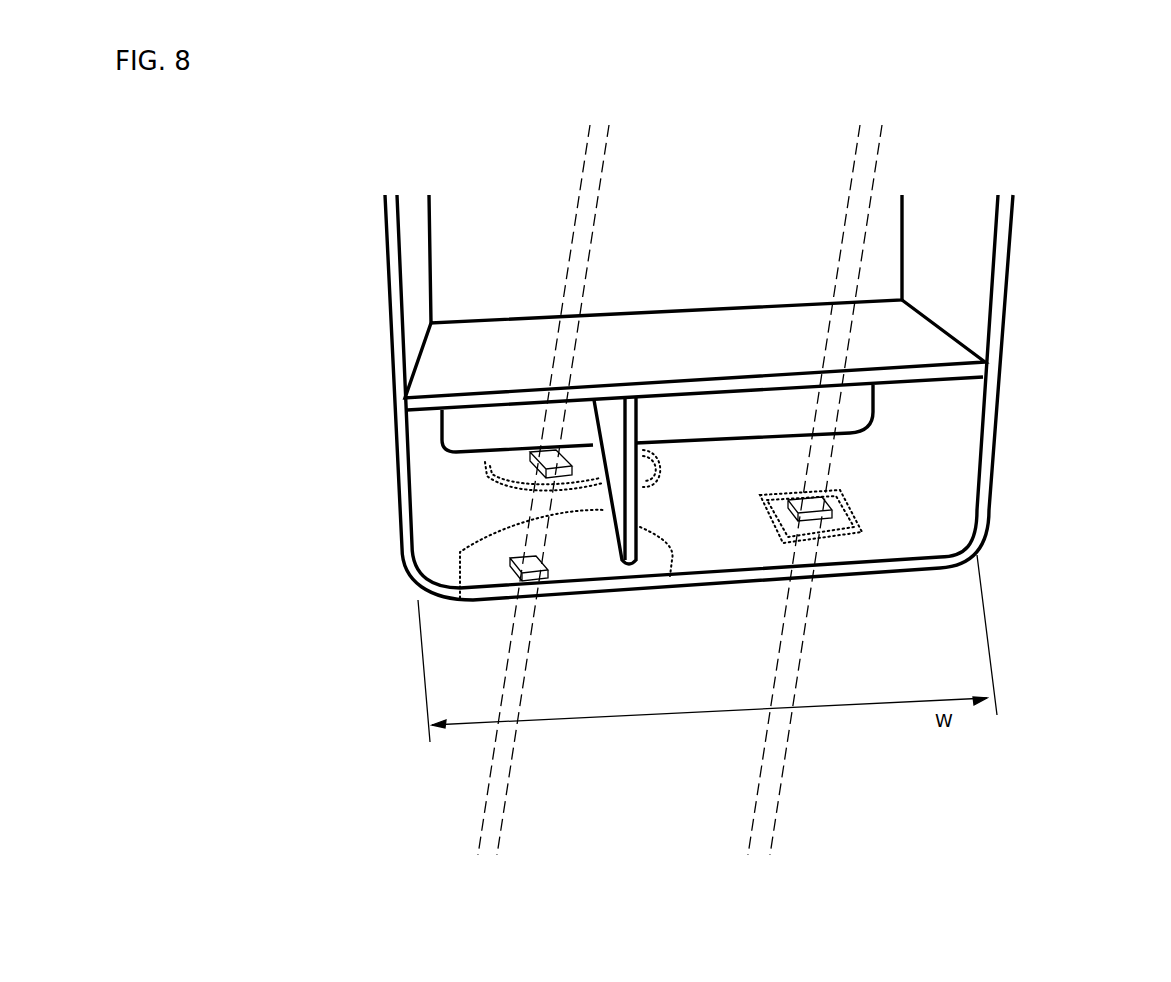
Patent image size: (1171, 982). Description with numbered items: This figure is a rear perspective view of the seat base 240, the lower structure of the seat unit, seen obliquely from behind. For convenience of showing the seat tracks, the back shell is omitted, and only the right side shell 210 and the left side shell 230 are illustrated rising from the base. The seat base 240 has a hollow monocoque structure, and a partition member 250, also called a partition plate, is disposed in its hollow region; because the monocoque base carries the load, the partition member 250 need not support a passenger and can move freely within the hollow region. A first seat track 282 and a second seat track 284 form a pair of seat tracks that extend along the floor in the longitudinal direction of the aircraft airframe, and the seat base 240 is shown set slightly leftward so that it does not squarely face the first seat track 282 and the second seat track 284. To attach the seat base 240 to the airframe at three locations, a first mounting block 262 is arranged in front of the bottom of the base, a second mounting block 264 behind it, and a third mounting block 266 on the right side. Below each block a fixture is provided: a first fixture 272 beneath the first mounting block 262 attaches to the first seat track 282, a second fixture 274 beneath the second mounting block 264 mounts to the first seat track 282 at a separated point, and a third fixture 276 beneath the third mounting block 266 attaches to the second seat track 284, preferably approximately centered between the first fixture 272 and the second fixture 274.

The right side shell 210 is at (1005, 247).
The left side shell 230 is at (387, 263).
The seat base 240 is at (985, 497).
The partition member 250 is at (645, 572).
The first mounting block 262 is at (530, 460).
The second mounting block 264 is at (508, 562).
The third mounting block 266 is at (845, 503).
The first fixture 272 is at (527, 450).
The second fixture 274 is at (537, 583).
The third fixture 276 is at (833, 527).
The first seat track 282 is at (592, 200).
The second seat track 284 is at (860, 175).